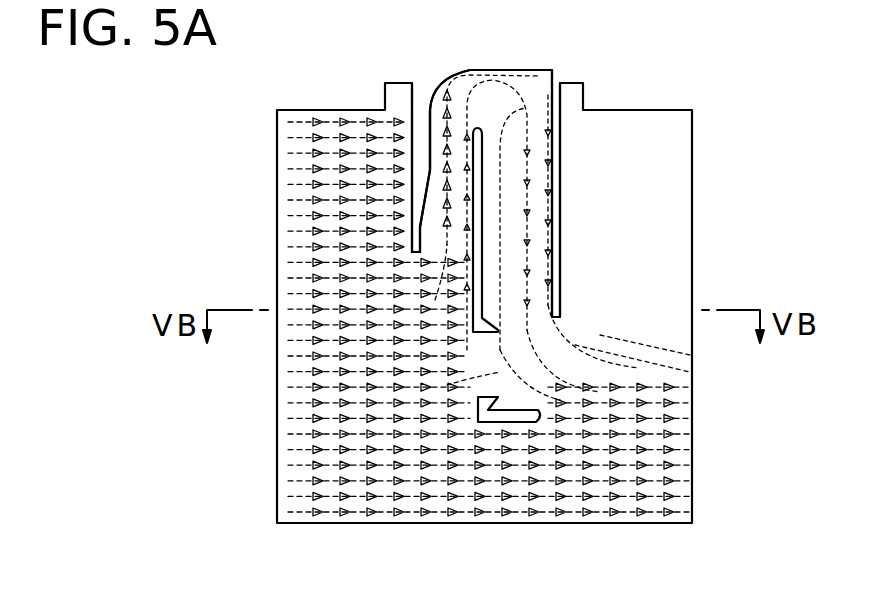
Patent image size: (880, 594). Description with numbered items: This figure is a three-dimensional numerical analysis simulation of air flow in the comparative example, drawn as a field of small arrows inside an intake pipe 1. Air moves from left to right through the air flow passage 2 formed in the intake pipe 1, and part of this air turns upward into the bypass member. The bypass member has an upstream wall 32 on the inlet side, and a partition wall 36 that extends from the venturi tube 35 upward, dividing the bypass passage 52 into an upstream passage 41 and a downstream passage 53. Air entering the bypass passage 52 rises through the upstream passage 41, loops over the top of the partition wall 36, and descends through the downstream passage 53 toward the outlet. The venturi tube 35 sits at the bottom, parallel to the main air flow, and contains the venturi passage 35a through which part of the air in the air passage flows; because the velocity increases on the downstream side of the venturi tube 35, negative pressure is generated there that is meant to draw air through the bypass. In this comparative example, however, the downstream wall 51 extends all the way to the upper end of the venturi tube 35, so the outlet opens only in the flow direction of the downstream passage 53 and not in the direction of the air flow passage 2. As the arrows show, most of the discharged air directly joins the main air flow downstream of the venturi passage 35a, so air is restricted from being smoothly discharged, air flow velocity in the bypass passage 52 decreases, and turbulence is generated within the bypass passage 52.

The intake pipe 1 is at (651, 110).
The air flow passage 2 is at (290, 128).
The upstream wall 32 is at (417, 163).
The venturi tube 35 is at (498, 422).
The venturi passage 35a is at (483, 363).
The partition wall 36 is at (480, 163).
The upstream passage 41 is at (430, 110).
The downstream wall 51 is at (560, 235).
The bypass passage 52 is at (543, 87).
The downstream passage 53 is at (540, 200).